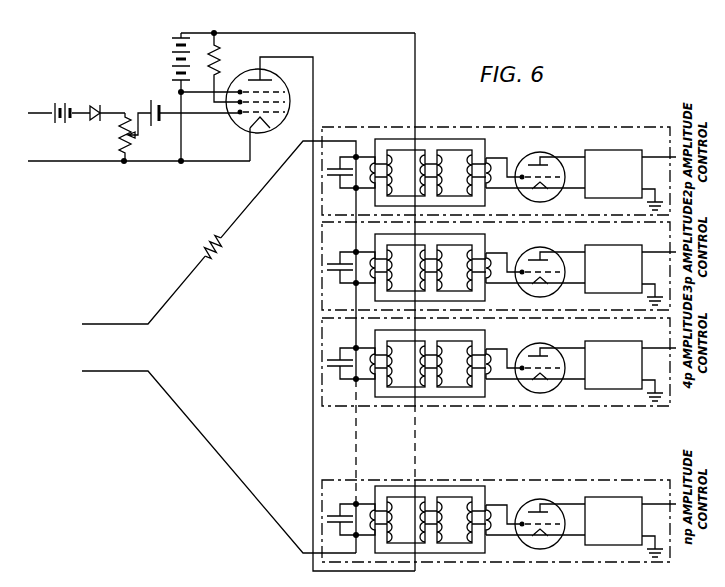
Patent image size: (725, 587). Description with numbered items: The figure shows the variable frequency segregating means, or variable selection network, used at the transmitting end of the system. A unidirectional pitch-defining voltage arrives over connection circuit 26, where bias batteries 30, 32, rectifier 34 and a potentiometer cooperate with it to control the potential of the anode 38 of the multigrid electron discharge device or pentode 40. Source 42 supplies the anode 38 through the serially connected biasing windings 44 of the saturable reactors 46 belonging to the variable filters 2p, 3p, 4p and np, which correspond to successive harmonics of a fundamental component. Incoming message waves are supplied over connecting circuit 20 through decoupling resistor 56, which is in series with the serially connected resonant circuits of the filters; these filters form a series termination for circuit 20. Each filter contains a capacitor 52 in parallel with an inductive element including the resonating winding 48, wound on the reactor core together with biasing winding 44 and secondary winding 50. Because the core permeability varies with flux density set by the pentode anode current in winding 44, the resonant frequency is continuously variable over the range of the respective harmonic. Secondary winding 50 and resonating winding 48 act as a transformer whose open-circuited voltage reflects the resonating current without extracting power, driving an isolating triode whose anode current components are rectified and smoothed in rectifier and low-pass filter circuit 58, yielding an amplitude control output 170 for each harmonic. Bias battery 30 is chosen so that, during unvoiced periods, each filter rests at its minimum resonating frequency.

The connecting circuit 20 is at (106, 325).
The connection circuit 26 is at (33, 116).
The bias battery 30 is at (60, 101).
The bias battery 32 is at (155, 100).
The rectifier 34 is at (100, 98).
The anode 38 is at (249, 78).
The pentode 40 is at (275, 88).
The source 42 is at (175, 46).
The biasing winding 44 is at (454, 173).
The saturable reactor 46 is at (443, 176).
The resonating winding 48 is at (396, 173).
The secondary winding 50 is at (465, 175).
The capacitor 52 is at (341, 182).
The decoupling resistor 56 is at (222, 257).
The rectifier and low-pass filter circuit 58 is at (624, 173).
The amplitude control output 170 is at (659, 169).
The variable filter 2p is at (516, 151).
The variable filter 3p is at (535, 264).
The variable filter 4p is at (535, 360).
The variable filter np is at (535, 516).